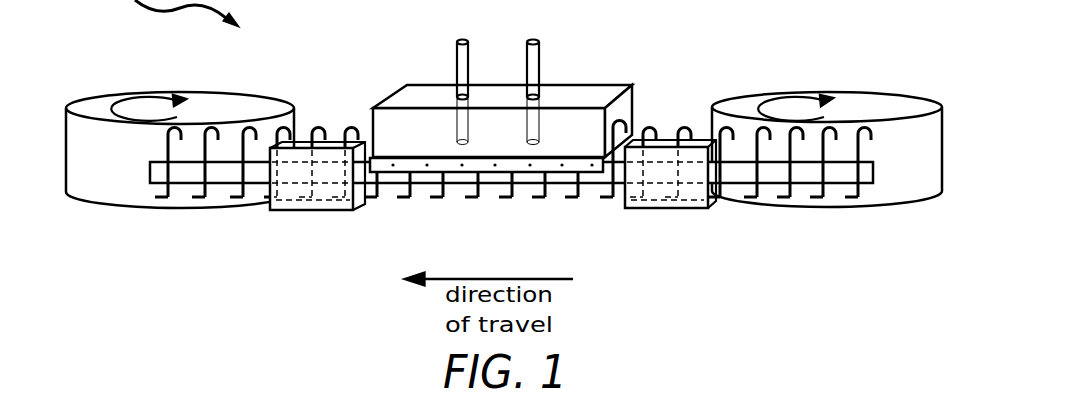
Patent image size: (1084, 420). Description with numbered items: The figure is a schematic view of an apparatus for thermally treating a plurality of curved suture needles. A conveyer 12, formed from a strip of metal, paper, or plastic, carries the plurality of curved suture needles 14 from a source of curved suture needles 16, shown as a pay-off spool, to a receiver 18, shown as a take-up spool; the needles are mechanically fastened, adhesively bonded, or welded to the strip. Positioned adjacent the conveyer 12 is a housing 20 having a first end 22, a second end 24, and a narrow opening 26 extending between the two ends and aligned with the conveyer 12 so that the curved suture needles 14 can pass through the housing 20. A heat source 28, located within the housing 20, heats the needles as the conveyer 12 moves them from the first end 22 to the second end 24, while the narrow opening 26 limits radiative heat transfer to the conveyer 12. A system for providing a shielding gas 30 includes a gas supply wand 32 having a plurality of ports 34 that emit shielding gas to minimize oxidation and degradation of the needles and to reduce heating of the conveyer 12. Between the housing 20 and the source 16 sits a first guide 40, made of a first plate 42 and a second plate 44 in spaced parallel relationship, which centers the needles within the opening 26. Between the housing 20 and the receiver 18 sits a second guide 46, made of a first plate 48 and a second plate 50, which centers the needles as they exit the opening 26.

The conveyer 12 is at (254, 184).
The curved suture needles 14 is at (783, 200).
The source of curved suture needles 16 is at (908, 95).
The receiver 18 is at (90, 200).
The housing 20 is at (531, 84).
The first end 22 is at (633, 96).
The second end 24 is at (384, 104).
The opening 26 is at (617, 186).
The heat source 28 is at (526, 73).
The system for providing a shielding gas 30 is at (383, 173).
The gas supply wand 32 is at (460, 173).
The ports 34 is at (594, 183).
The first guide 40 is at (700, 209).
The first plate 42 is at (675, 209).
The second plate 44 is at (700, 141).
The second guide 46 is at (348, 211).
The first plate 48 is at (276, 211).
The second plate 50 is at (334, 142).